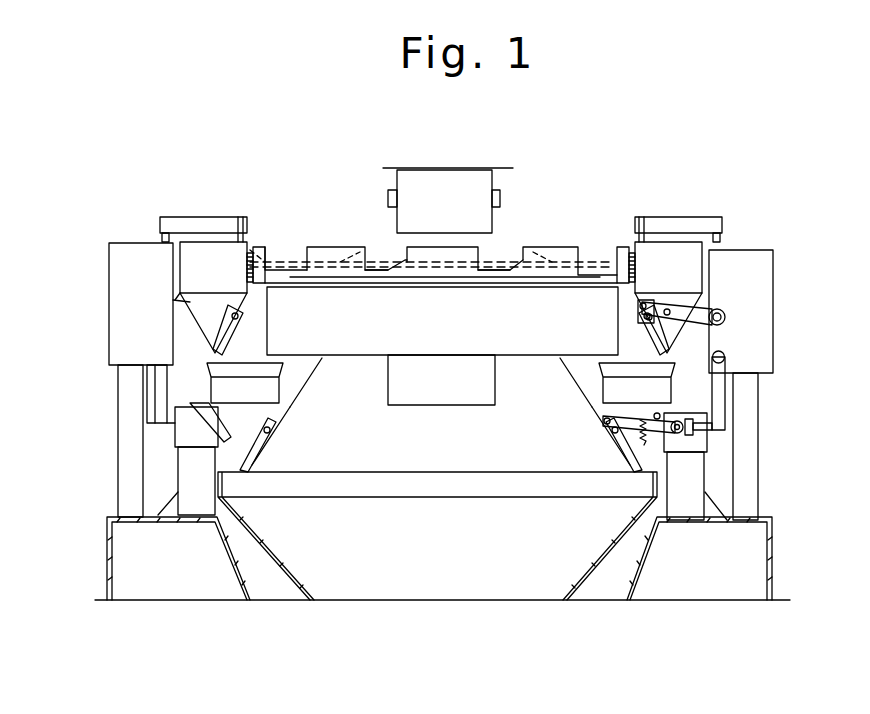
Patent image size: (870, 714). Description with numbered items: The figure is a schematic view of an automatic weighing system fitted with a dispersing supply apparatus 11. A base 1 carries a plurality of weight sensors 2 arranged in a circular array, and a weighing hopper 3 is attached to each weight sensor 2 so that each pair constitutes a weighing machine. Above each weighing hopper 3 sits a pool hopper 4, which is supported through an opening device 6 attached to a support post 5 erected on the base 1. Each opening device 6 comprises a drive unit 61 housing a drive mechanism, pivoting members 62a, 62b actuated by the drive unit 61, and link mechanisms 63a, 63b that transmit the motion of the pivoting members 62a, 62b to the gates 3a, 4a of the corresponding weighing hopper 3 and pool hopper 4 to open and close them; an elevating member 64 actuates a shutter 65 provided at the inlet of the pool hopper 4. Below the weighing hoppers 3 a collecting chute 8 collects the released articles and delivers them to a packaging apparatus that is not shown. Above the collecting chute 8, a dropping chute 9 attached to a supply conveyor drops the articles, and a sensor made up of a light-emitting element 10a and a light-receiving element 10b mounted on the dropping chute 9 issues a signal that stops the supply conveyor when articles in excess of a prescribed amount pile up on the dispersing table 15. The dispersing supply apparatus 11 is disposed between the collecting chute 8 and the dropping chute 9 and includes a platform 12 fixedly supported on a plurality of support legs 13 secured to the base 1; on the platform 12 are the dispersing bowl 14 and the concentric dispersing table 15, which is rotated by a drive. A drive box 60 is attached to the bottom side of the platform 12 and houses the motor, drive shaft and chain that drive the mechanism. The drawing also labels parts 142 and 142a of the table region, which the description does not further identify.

The base 1 is at (772, 558).
The weight sensor 2 is at (183, 462).
The weighing hopper 3 is at (283, 418).
The gate of weighing hopper 3a is at (262, 453).
The pool hopper 4 is at (206, 318).
The gate of pool hopper 4a is at (441, 334).
The support post 5 is at (120, 450).
The opening device 6 is at (104, 345).
The collecting chute 8 is at (443, 485).
The dropping chute 9 is at (462, 185).
The light-emitting element 10a is at (386, 197).
The light-receiving element 10b is at (500, 203).
The dispersing supply apparatus 11 is at (576, 240).
The platform 12 is at (375, 365).
The support leg 13 is at (304, 374).
The dispersing bowl 14 is at (338, 247).
The dispersing table 15 is at (497, 262).
The drive box 60 is at (477, 402).
The drive unit 61 is at (103, 308).
The pivoting member 62a is at (720, 402).
The pivoting member 62b is at (707, 315).
The link mechanism 63a is at (612, 436).
The link mechanism 63b is at (640, 308).
The elevating member 64 is at (178, 222).
The shutter 65 is at (248, 262).
The pusher block 142 is at (455, 270).
The pusher side block 142a is at (372, 268).